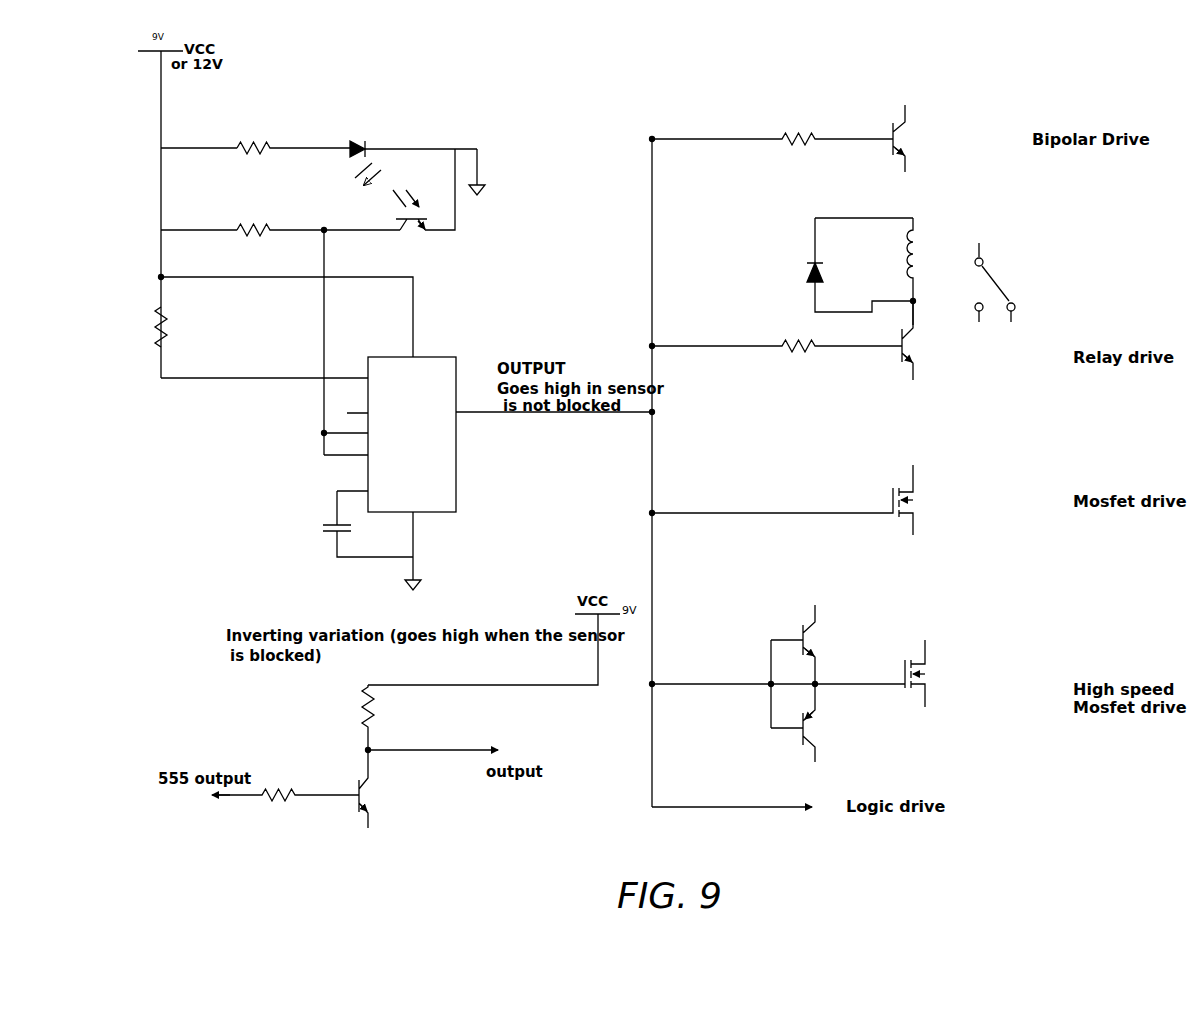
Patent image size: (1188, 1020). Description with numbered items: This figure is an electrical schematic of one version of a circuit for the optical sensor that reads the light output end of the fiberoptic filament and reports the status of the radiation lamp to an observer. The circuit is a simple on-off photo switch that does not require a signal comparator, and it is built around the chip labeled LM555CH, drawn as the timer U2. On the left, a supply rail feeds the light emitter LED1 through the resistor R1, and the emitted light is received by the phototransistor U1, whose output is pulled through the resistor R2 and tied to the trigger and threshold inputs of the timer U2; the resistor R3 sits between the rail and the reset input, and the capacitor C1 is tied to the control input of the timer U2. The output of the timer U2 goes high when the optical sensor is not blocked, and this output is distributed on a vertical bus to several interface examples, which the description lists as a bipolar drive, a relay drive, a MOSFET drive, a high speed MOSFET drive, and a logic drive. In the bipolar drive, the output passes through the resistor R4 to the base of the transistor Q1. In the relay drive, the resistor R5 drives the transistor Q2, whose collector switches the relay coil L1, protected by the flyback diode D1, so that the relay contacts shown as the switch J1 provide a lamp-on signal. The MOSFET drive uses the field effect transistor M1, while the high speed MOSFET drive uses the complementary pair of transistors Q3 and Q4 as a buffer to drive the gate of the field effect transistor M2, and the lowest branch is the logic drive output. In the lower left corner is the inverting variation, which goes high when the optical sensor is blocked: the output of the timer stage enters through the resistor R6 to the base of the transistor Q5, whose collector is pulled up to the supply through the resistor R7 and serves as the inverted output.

The resistor 1.0 kohm R1 is at (255, 148).
The light emitting diode LED1 is at (407, 151).
The phototransistor LTR4206 U1 is at (408, 207).
The resistor 10 Mohm R2 is at (280, 230).
The resistor 4.7 ohm R3 is at (183, 324).
The LM555CH timer U2 is at (416, 461).
The capacitor 10nF C1 is at (368, 524).
The resistor 100 ohm R4 is at (772, 140).
The NPN transistor bipolar drive Q1 is at (950, 137).
The diode 1N4007GP D1 is at (860, 265).
The inductor 100mH relay coil L1 is at (936, 271).
The switch key = space J1 is at (1030, 282).
The resistor 100 ohm R5 is at (777, 347).
The NPN transistor relay drive Q2 is at (959, 340).
The MOSFET drive M1 is at (841, 499).
The NPN transistor 2N3904 Q3 is at (817, 642).
The PNP transistor 2N3906 Q4 is at (817, 723).
The MOSFET high speed drive M2 is at (973, 671).
The resistor 1.0 kohm R7 is at (399, 717).
The NPN transistor 2N3904 inverter Q5 is at (387, 789).
The resistor 1.0 kohm R6 is at (285, 795).